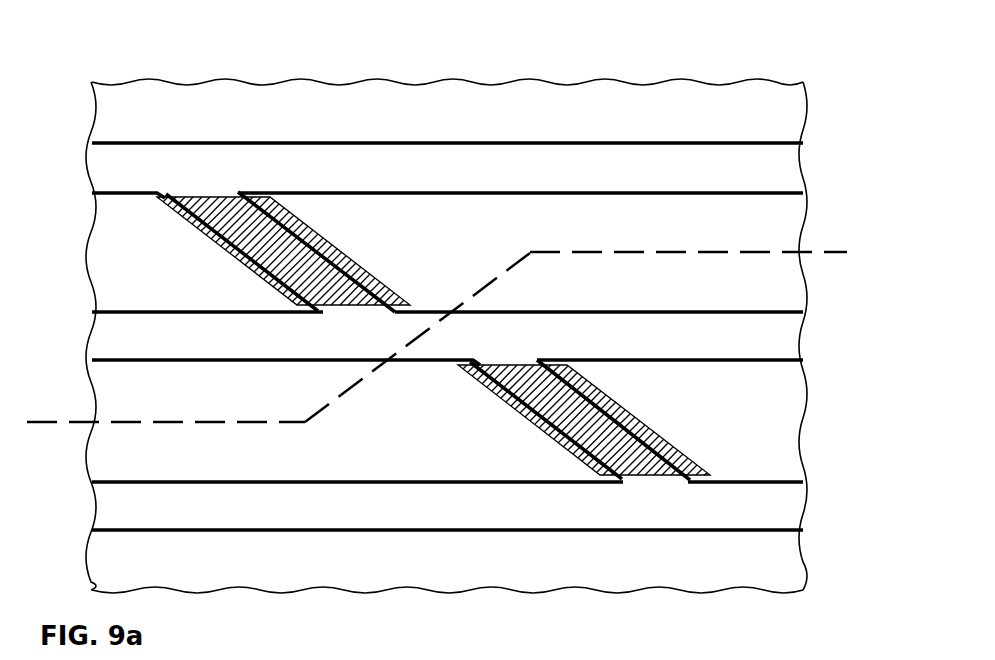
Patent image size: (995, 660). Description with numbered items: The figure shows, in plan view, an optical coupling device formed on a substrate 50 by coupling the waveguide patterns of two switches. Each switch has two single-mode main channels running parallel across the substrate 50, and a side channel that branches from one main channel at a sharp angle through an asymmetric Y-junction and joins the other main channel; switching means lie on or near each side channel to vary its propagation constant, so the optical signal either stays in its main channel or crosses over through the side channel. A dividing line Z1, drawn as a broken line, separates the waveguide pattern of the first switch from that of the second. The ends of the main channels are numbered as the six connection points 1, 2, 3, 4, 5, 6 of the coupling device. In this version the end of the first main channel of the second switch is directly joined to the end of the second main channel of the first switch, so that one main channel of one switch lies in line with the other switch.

The substrate 50 is at (730, 75).
The connection point 1 is at (113, 177).
The connection point 2 is at (270, 343).
The connection point 3 is at (253, 515).
The connection point 4 is at (537, 175).
The connection point 5 is at (685, 343).
The connection point 6 is at (641, 513).
The dividing line Z1 is at (47, 428).